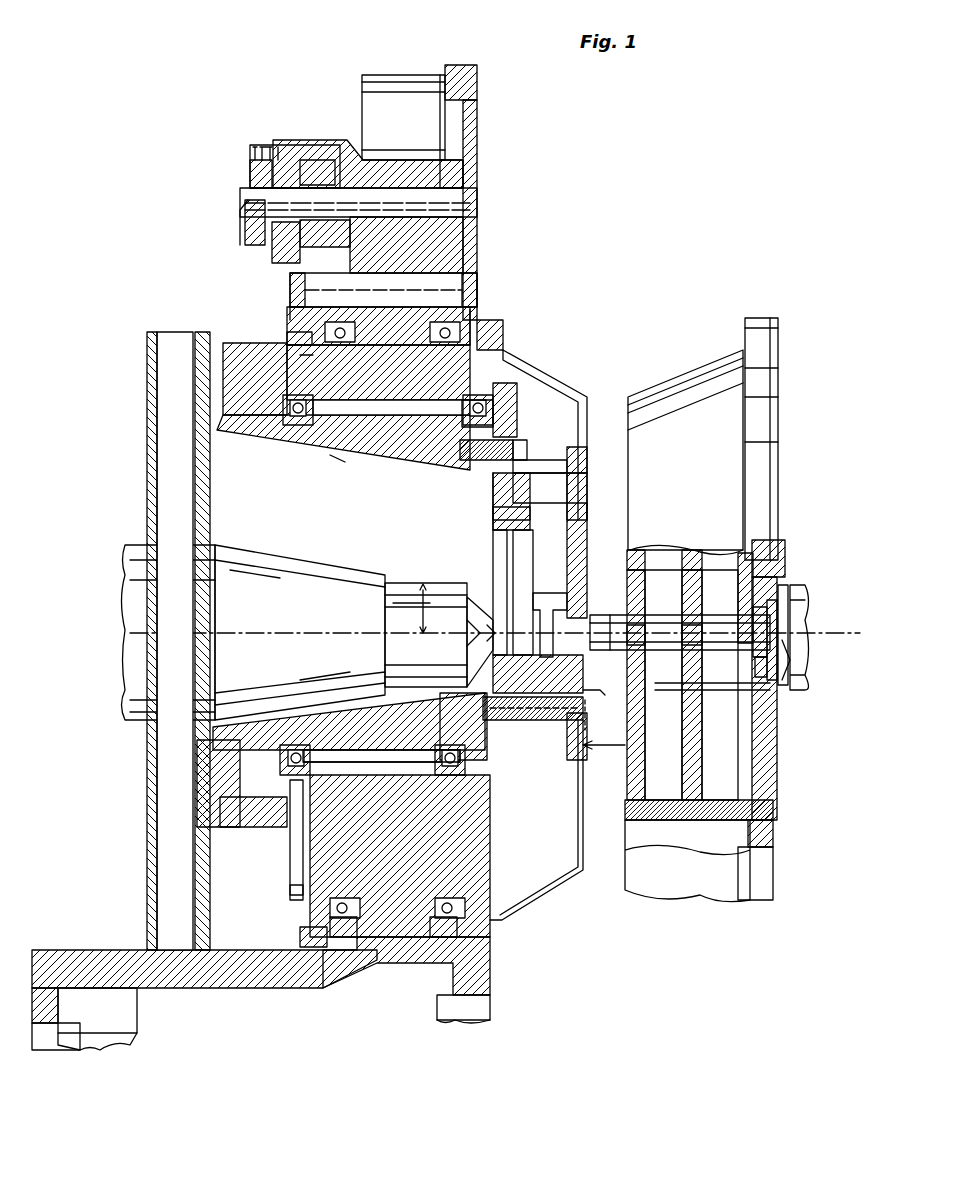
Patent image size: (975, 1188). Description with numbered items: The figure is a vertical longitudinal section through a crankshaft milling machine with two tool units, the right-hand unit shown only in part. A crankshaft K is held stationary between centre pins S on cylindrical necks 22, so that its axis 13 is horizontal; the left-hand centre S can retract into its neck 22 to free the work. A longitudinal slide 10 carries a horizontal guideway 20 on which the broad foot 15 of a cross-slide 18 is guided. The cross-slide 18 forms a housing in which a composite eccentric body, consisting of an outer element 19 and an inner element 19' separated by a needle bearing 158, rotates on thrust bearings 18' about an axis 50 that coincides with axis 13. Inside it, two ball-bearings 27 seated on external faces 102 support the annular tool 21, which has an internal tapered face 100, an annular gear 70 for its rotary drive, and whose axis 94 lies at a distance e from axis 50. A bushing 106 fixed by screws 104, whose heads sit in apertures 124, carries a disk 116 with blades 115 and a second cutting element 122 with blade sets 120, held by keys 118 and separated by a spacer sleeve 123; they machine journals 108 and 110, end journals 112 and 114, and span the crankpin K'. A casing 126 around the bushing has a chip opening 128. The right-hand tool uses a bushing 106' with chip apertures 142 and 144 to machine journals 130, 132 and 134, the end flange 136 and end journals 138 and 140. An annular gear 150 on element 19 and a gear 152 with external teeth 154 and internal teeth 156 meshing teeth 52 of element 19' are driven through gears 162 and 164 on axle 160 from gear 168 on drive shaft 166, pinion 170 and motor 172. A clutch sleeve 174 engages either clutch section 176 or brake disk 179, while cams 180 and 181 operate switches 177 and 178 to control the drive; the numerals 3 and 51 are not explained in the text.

The section line 3 is at (604, 726).
The longitudinal slide 10 is at (125, 1040).
The axis of the crankshaft 13 is at (335, 640).
The foot of the cross-slide 15 is at (235, 972).
The cross-slide 18 is at (392, 568).
The thrust bearing 18' is at (389, 612).
The outer eccentric annular element 19 is at (404, 622).
The inner eccentric annular element 19' is at (381, 642).
The horizontal guideway 20 is at (95, 985).
The tool 21 is at (380, 448).
The neck 22 is at (805, 585).
The internal ball-bearing 27 is at (296, 426).
The axis of the cylindrical space 50 is at (265, 633).
The shaft line 51 is at (665, 686).
The external teeth 52 is at (260, 425).
The annular gear 70 is at (233, 420).
The axis of the tool 94 is at (432, 588).
The distance e is at (420, 612).
The internal tapered face 100 is at (420, 450).
The external faces 102 is at (303, 425).
The screw 104 is at (512, 430).
The bushing 106 is at (534, 613).
The bushing 106' is at (688, 460).
The bearing journal 108 is at (497, 530).
The bearing journal 110 is at (585, 600).
The end journal 112 is at (500, 560).
The end journal 114 is at (470, 630).
The cutting blades 115 is at (567, 520).
The circular disk 116 is at (587, 500).
The key 118 is at (545, 720).
The sets of cutting blades 120 is at (538, 674).
The second annular cutting element 122 is at (493, 500).
The spacer sleeve 123 is at (535, 473).
The aperture 124 is at (545, 460).
The annular casing 126 is at (520, 346).
The opening 128 is at (545, 893).
The bearing journal 130 is at (640, 645).
The bearing journal 132 is at (695, 645).
The bearing journal 134 is at (755, 665).
The end flange 136 is at (768, 680).
The end journal 138 is at (782, 590).
The end journal 140 is at (755, 628).
The apertures 142 is at (668, 566).
The apertures 144 is at (728, 566).
The annular gear 150 is at (495, 325).
The second annular gear 152 is at (300, 342).
The external teeth 154 is at (292, 312).
The internal teeth 156 is at (295, 355).
The needle bearing 158 is at (391, 399).
The horizontal axle 160 is at (383, 290).
The gear 162 is at (285, 262).
The gear 164 is at (478, 315).
The drive shaft 166 is at (470, 205).
The gear 168 is at (470, 176).
The pinion 170 is at (477, 90).
The electric motor 172 is at (380, 90).
The clutch sleeve 174 is at (330, 240).
The clutch section 176 is at (320, 165).
The electrical switch 177 is at (255, 145).
The electrical switch 178 is at (266, 145).
The brake disk 179 is at (283, 140).
The first cam 180 is at (248, 232).
The cam 181 is at (245, 240).
The crankshaft K is at (596, 709).
The crankpin K' is at (550, 603).
The centre pin S is at (485, 635).